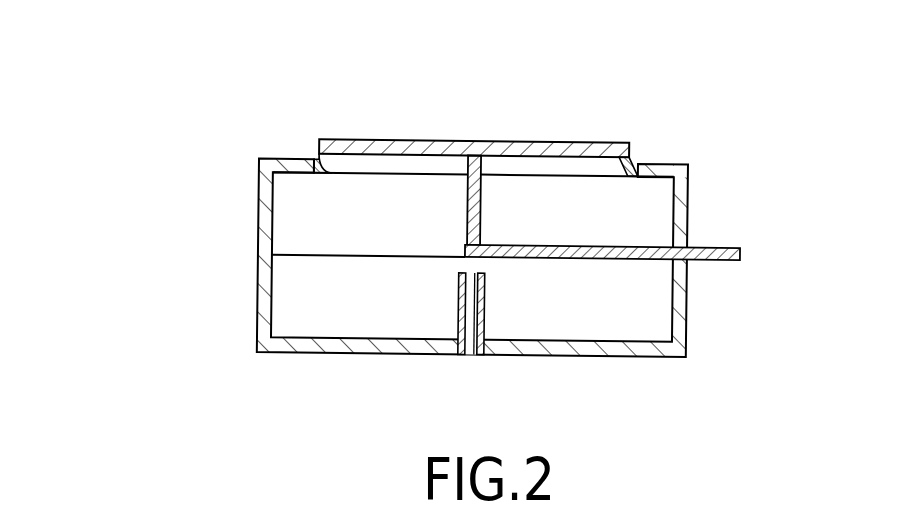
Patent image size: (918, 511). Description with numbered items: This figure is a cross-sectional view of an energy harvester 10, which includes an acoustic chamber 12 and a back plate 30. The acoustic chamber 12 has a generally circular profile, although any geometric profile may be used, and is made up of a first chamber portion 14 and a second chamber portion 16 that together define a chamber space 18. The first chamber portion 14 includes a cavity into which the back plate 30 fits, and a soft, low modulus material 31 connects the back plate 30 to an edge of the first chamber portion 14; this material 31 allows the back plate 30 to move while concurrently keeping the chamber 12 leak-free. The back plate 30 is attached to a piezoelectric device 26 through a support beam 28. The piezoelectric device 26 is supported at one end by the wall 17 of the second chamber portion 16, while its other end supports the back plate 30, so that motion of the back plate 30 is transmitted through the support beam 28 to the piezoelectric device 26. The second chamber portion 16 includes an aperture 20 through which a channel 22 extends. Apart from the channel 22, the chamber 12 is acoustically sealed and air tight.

The energy harvester 10 is at (147, 125).
The acoustic chamber 12 is at (257, 297).
The first chamber portion 14 is at (690, 188).
The second chamber portion 16 is at (688, 340).
The wall 17 is at (688, 288).
The chamber space 18 is at (290, 230).
The aperture 20 is at (482, 355).
The channel 22 is at (470, 357).
The piezoelectric device 26 is at (738, 248).
The support beam 28 is at (482, 208).
The back plate 30 is at (528, 148).
The soft, low modulus material 31 is at (626, 176).